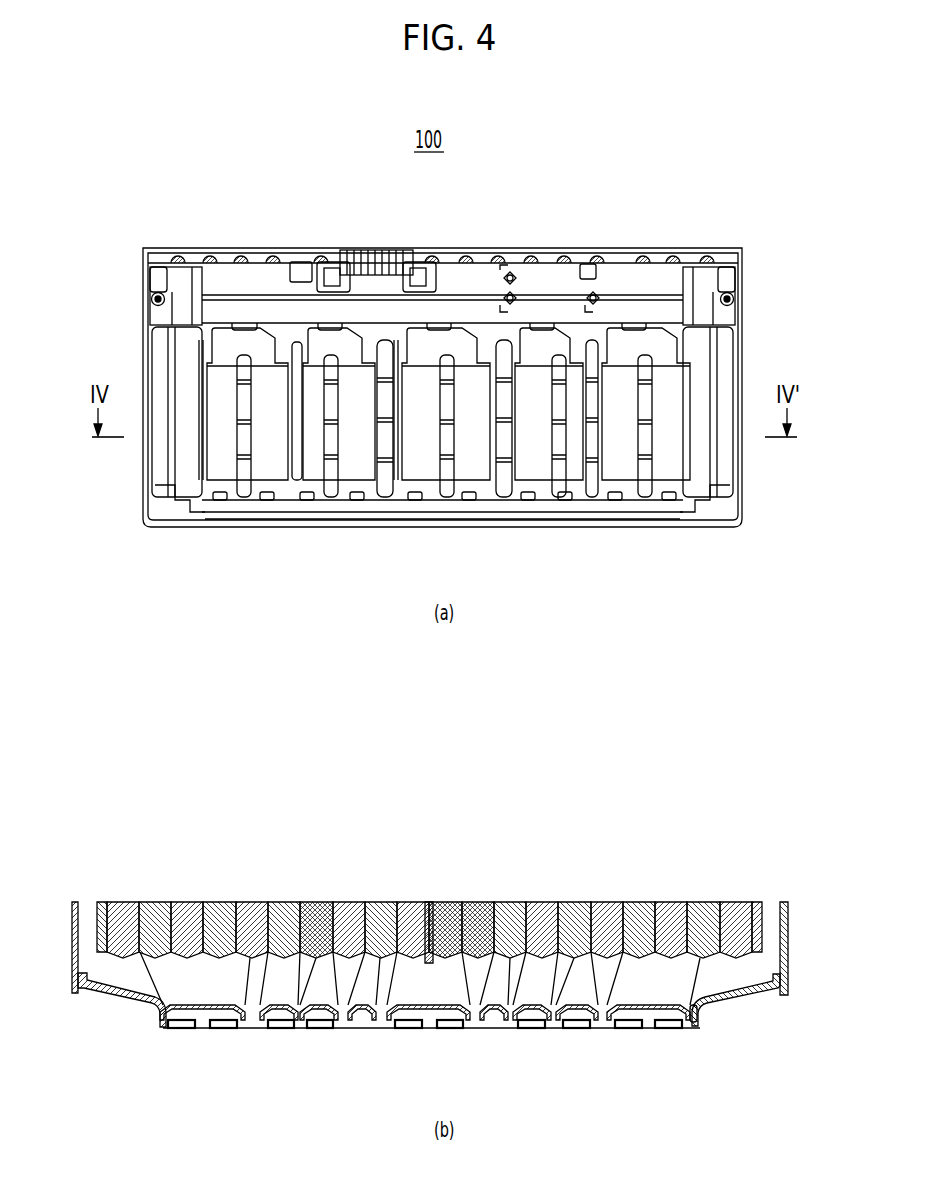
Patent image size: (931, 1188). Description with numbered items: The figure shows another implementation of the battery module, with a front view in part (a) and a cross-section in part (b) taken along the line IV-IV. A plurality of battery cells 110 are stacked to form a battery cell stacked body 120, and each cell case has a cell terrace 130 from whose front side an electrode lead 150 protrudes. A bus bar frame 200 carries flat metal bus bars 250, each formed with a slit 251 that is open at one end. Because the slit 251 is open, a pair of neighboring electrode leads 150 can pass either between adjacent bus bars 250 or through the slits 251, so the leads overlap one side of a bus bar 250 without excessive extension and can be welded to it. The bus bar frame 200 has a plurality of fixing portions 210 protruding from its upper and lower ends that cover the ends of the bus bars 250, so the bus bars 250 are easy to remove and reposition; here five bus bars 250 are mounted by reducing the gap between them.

The battery cell 110 is at (210, 257).
The battery cell stacked body 120 is at (752, 905).
The cell terrace 130 is at (708, 990).
The electrode lead 150 is at (662, 380).
The bus bar frame 200 is at (742, 288).
The fixing portion 210 is at (240, 321).
The bus bar 250 is at (620, 330).
The slit 251 is at (642, 498).